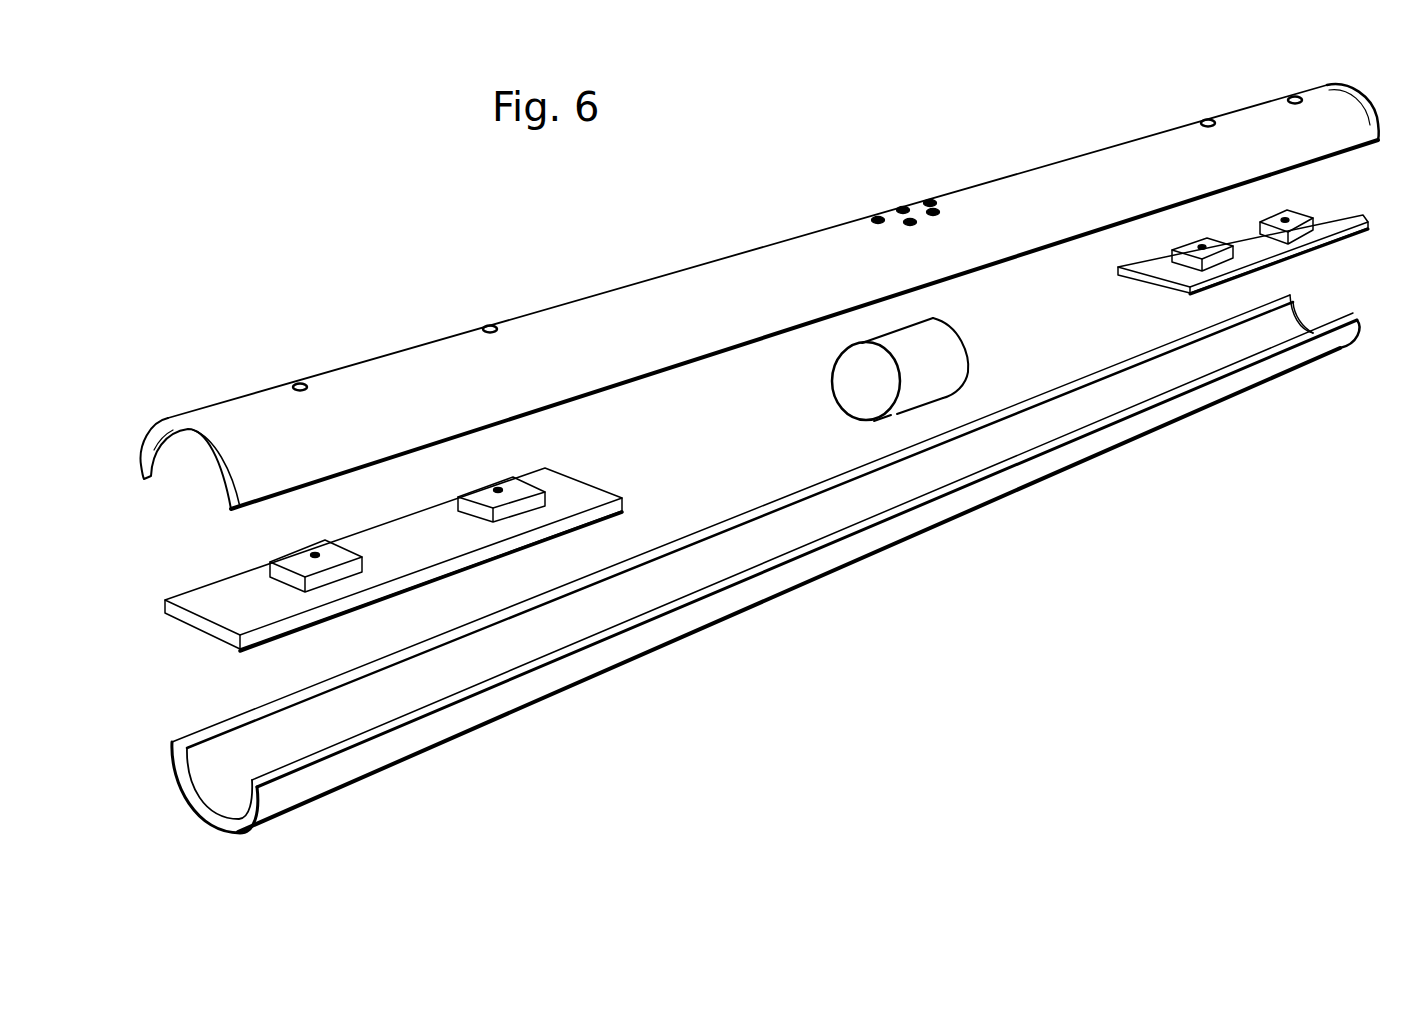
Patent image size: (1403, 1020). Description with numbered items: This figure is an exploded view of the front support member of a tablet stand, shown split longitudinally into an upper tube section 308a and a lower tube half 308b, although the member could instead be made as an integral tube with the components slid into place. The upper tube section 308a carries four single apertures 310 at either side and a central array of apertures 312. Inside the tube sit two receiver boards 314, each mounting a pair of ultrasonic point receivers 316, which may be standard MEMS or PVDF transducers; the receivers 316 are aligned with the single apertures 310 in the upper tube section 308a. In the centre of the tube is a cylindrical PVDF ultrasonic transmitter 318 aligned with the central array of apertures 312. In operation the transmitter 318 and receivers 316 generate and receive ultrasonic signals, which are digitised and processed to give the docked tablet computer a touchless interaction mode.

The upper tube section 308a is at (677, 300).
The lower tube half 308b is at (649, 637).
The single apertures 310 is at (299, 384).
The central array of apertures 312 is at (897, 201).
The receiver boards 314 is at (592, 494).
The ultrasonic point receivers 316 is at (288, 556).
The cylindrical PVDF ultrasonic transmitter 318 is at (950, 358).